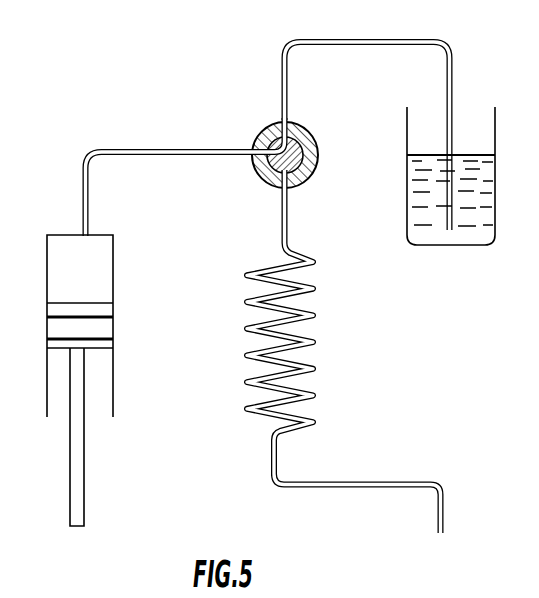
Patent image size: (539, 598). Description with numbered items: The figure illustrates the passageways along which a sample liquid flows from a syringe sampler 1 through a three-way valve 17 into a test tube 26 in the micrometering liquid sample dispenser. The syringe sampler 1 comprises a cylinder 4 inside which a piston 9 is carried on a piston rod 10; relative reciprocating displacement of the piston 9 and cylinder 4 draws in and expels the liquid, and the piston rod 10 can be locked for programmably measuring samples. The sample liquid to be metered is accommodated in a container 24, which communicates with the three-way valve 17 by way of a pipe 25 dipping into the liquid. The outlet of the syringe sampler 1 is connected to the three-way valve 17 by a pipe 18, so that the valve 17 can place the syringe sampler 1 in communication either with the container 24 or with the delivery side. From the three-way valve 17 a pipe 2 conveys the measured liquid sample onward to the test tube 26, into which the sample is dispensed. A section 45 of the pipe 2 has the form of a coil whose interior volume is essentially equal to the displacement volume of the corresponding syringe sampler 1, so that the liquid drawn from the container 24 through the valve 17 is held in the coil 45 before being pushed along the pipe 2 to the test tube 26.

The syringe sampler 1 is at (90, 374).
The cylinder 4 is at (46, 270).
The piston 9 is at (107, 328).
The piston rod 10 is at (84, 463).
The pipe 18 is at (183, 149).
The three-way valve 17 is at (265, 124).
The pipe 25 is at (453, 96).
The container 24 is at (496, 203).
The coil section 45 is at (335, 343).
The pipe 2 is at (335, 482).
The test tube 26 is at (440, 564).